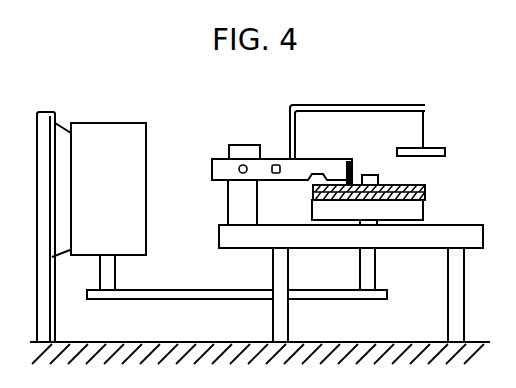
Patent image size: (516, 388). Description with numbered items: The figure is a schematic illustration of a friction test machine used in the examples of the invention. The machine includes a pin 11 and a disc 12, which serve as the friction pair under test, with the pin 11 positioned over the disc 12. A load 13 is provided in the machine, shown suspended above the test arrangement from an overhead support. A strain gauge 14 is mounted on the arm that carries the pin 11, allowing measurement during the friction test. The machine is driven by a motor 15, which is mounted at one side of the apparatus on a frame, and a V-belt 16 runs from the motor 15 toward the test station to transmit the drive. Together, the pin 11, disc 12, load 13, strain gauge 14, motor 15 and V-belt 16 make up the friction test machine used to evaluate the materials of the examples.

The pin 11 is at (352, 166).
The disc 12 is at (425, 195).
The load 13 is at (432, 148).
The strain gauge 14 is at (276, 164).
The motor 15 is at (135, 141).
The V-belt 16 is at (191, 290).